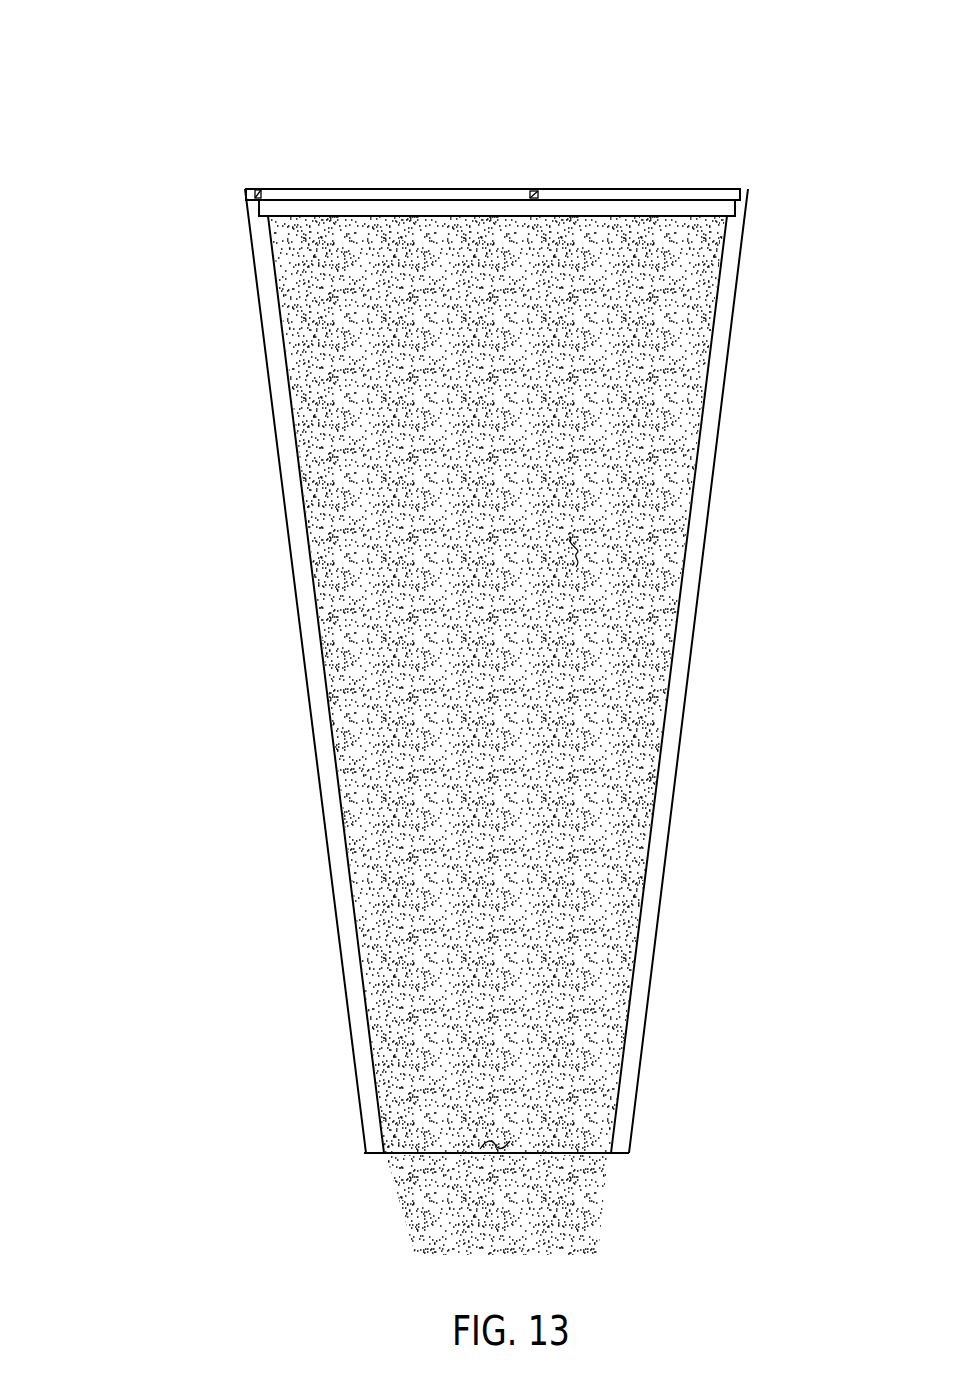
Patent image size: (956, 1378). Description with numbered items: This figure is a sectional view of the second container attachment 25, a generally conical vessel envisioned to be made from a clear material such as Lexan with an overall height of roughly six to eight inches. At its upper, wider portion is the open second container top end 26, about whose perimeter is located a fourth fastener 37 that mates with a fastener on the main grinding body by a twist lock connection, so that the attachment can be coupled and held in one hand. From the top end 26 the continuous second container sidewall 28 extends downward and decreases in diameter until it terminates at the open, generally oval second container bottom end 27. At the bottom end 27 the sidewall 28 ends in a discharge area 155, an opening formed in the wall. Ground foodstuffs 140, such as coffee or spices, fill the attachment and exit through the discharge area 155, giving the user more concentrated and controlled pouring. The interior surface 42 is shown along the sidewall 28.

The second container attachment 25 is at (122, 180).
The second container top end 26 is at (368, 199).
The second container bottom end 27 is at (370, 1157).
The second container sidewall 28 is at (662, 875).
The fourth fastener 37 is at (257, 190).
The inner frame edge 42 is at (657, 787).
The ground foodstuffs 140 is at (588, 551).
The discharge area 155 is at (488, 1147).